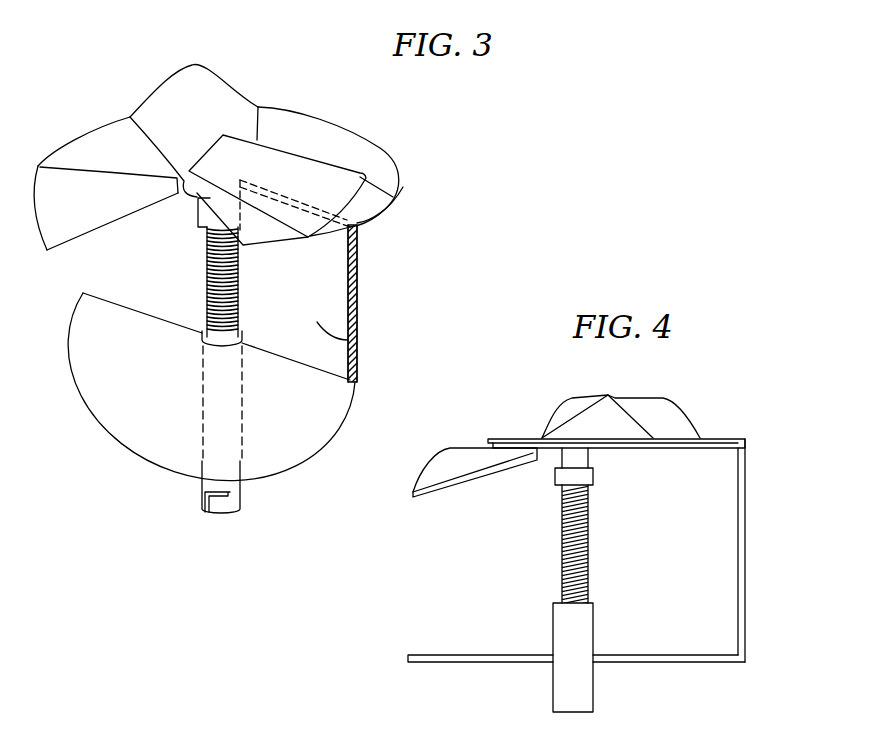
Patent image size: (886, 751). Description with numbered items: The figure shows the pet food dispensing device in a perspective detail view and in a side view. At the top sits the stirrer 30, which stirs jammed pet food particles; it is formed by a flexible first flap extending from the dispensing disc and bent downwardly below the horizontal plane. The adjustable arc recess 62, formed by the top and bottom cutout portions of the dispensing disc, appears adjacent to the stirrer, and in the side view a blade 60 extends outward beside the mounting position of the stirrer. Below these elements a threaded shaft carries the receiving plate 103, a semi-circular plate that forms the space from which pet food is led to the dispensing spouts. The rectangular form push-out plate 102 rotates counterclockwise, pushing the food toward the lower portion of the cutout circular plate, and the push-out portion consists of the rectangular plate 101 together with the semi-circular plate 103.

In FIG. 3, the stirrer 30 is at (405, 135).
In FIG. 4, the stirrer 30 is at (710, 412).
In FIG. 4, the blade 60 is at (433, 470).
In FIG. 3, the arc recess 62 is at (403, 185).
In FIG. 4, the arc recess 62 is at (745, 440).
In FIG. 3, the rectangular plate 101 is at (357, 340).
In FIG. 3, the push-out plate 102 is at (357, 362).
In FIG. 4, the push-out plate 102 is at (745, 548).
In FIG. 3, the receiving plate 103 is at (338, 408).
In FIG. 4, the receiving plate 103 is at (697, 662).